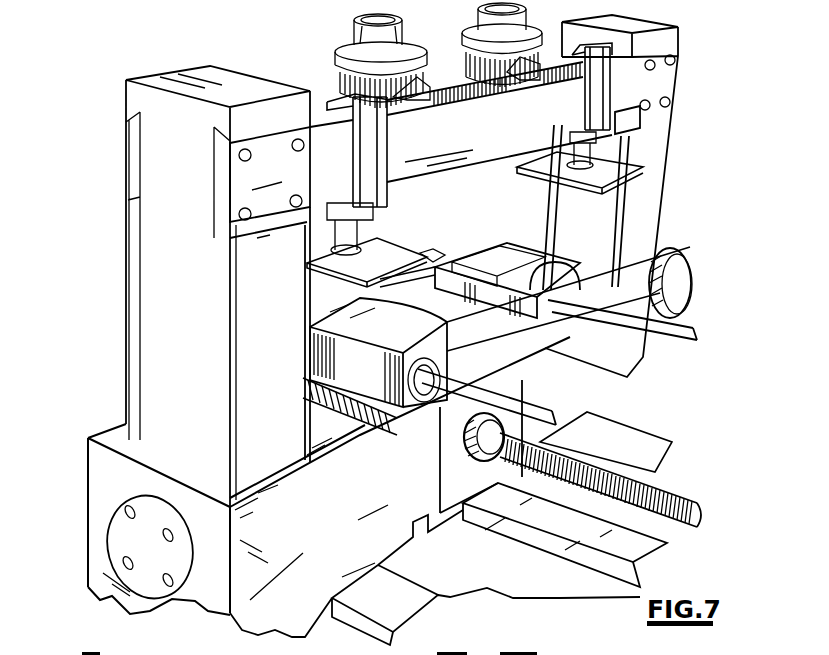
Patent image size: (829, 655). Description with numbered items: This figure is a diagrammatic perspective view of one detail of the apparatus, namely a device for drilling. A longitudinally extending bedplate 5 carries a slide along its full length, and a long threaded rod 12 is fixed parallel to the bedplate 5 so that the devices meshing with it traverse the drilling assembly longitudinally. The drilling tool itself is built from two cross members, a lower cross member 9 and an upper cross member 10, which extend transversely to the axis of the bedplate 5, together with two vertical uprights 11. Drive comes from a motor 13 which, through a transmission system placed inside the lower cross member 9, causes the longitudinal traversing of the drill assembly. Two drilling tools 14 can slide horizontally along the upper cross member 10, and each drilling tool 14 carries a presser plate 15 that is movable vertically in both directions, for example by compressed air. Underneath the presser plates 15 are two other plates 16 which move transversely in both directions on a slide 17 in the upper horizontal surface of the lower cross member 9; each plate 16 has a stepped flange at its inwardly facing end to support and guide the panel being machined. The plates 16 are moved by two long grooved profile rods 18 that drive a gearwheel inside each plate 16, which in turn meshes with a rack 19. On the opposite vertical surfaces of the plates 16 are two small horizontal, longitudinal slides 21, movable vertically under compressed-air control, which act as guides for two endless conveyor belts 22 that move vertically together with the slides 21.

The bedplate 5 is at (520, 572).
The lower cross member 9 is at (230, 615).
The upper cross member 10 is at (337, 72).
The vertical uprights 11 is at (647, 155).
The threaded rod 12 is at (667, 490).
The motor 13 is at (693, 265).
The drilling tools 14 is at (383, 42).
The presser plate 15 is at (307, 228).
The plates 16 is at (320, 318).
The slide 17 is at (310, 388).
The grooved profile rods 18 is at (285, 398).
The rack 19 is at (545, 330).
The horizontal longitudinal slides 21 is at (575, 252).
The conveyor belts 22 is at (435, 262).